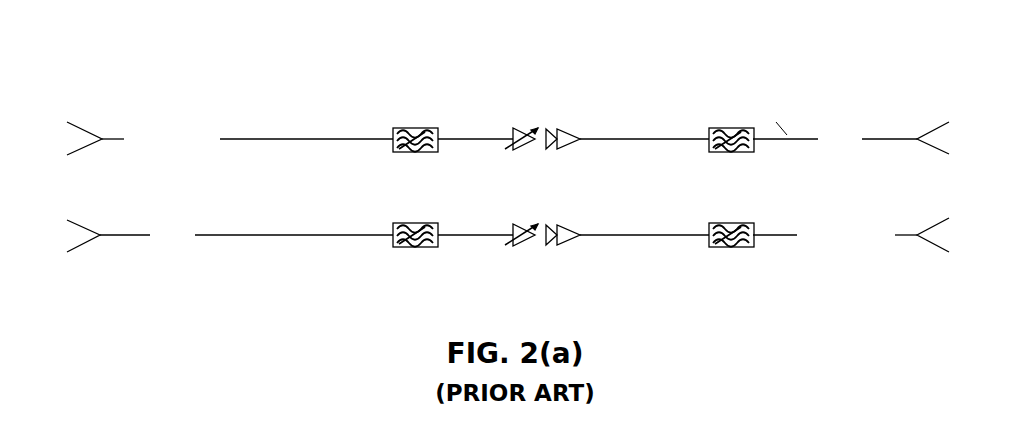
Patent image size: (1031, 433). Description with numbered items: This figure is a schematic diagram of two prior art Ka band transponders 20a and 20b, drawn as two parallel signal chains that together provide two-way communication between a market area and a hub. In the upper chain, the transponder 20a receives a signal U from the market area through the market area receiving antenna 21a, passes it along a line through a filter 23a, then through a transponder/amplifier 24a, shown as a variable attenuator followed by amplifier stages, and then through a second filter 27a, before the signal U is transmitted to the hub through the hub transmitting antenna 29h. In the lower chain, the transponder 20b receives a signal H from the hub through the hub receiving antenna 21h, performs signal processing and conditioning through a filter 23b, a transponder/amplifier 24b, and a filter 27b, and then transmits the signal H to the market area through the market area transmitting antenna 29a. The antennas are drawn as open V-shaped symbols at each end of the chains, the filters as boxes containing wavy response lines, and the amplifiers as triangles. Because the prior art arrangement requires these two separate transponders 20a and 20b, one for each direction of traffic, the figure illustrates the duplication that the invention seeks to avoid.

The Ka band transponder 20a is at (971, 63).
The Ka band transponder 20b is at (971, 201).
The market area receiving antenna 21a is at (88, 125).
The filter 23a is at (415, 128).
The transponder/amplifier 24a is at (542, 122).
The filter 27a is at (732, 128).
The market area transmitting antenna 29a is at (912, 124).
The hub receiving antenna 21h is at (103, 249).
The filter 23b is at (415, 251).
The transponder/amplifier 24b is at (542, 251).
The filter 27b is at (731, 251).
The hub transmitting antenna 29h is at (929, 248).